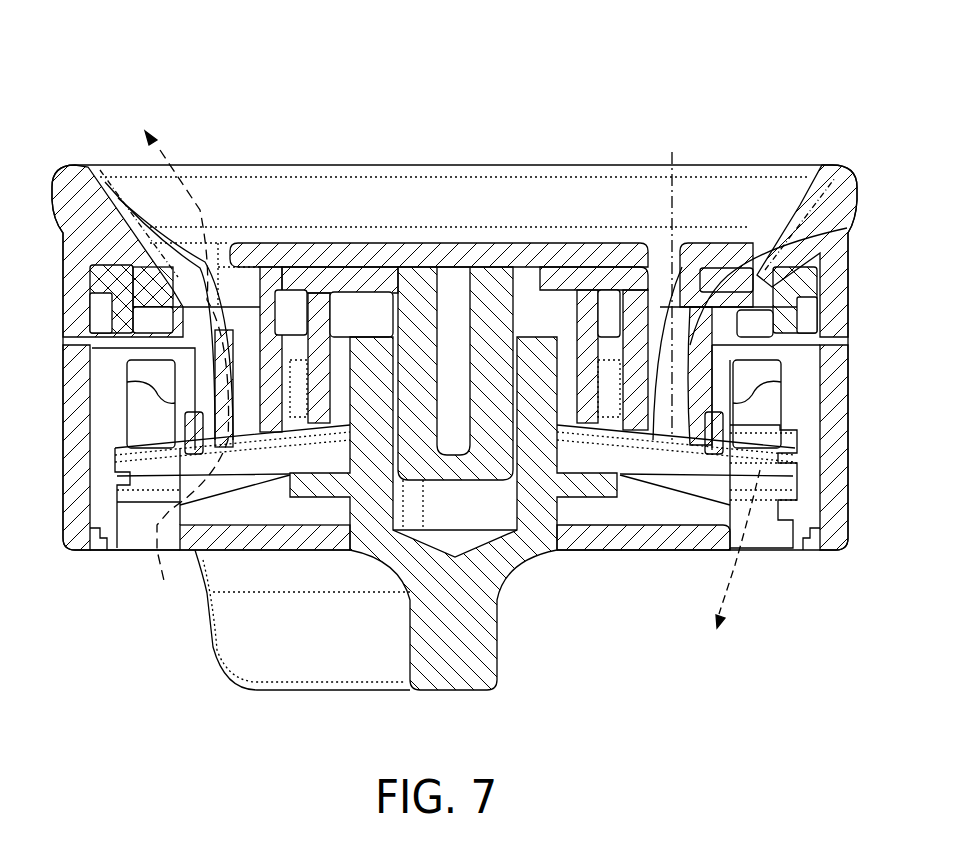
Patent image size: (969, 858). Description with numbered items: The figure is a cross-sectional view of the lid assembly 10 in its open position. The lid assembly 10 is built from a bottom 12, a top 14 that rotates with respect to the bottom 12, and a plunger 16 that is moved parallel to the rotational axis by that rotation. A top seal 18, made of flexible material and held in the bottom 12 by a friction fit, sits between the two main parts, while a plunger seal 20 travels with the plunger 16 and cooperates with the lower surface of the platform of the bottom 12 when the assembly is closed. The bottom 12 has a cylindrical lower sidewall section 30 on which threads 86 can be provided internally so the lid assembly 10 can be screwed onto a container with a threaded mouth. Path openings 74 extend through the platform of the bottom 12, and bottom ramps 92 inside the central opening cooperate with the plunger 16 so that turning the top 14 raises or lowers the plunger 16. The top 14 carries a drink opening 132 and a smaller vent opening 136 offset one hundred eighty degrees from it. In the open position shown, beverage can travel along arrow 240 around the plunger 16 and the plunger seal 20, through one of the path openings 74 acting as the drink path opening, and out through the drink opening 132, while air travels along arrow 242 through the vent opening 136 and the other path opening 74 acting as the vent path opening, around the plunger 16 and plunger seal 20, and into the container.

The lid assembly 10 is at (853, 80).
The bottom 12 is at (848, 410).
The top 14 is at (457, 185).
The plunger 16 is at (514, 560).
The top seal 18 is at (762, 323).
The plunger seal 20 is at (628, 518).
The lower sidewall section 30 is at (827, 467).
The path openings 74 is at (70, 318).
The threads 86 is at (770, 488).
The bottom ramps 92 is at (575, 392).
The drink opening 132 is at (70, 250).
The vent opening 136 is at (752, 285).
The arrow 240 is at (193, 190).
The arrow 242 is at (672, 163).